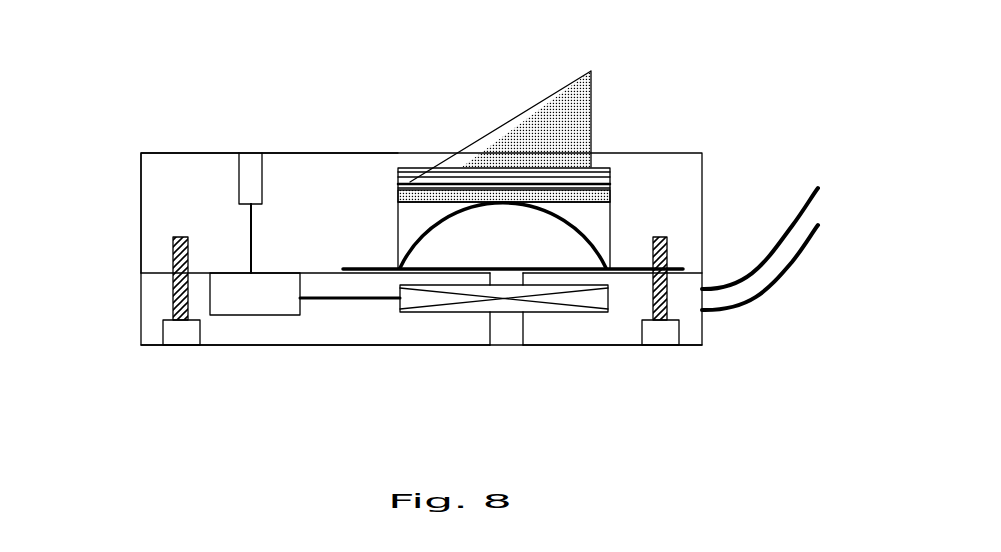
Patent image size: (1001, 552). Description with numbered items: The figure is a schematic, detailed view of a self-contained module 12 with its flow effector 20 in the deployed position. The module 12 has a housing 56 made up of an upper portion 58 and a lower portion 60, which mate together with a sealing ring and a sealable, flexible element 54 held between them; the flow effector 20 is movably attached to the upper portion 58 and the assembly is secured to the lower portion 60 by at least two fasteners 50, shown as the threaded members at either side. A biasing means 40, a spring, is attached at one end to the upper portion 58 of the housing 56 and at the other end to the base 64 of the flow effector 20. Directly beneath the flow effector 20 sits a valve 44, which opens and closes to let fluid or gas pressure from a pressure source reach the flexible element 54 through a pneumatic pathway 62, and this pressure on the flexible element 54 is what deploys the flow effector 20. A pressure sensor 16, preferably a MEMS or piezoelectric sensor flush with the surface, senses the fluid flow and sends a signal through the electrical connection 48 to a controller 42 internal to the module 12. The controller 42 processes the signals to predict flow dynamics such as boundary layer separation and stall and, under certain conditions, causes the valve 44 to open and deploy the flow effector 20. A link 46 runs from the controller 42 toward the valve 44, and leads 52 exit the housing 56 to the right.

The self-contained module 12 is at (141, 218).
The pressure sensor 16 is at (248, 153).
The flow effector 20 is at (523, 113).
The biasing means 40 is at (598, 172).
The controller 42 is at (253, 315).
The valve 44 is at (563, 313).
The drive rod 46 is at (352, 300).
The electrical connection 48 is at (257, 237).
The fasteners 50 is at (174, 346).
The lead wires 52 is at (818, 210).
The flexible element 54 is at (604, 245).
The housing 56 is at (195, 180).
The upper portion 58 is at (363, 168).
The lower portion 60 is at (412, 333).
The pneumatic pathway 62 is at (503, 335).
The base 64 is at (610, 193).